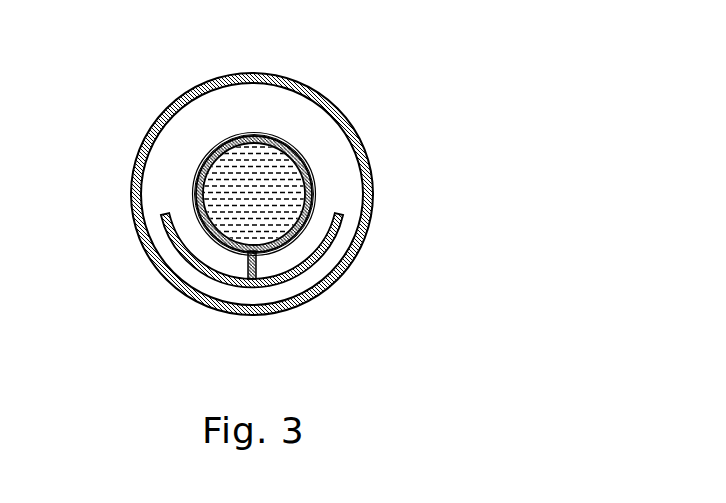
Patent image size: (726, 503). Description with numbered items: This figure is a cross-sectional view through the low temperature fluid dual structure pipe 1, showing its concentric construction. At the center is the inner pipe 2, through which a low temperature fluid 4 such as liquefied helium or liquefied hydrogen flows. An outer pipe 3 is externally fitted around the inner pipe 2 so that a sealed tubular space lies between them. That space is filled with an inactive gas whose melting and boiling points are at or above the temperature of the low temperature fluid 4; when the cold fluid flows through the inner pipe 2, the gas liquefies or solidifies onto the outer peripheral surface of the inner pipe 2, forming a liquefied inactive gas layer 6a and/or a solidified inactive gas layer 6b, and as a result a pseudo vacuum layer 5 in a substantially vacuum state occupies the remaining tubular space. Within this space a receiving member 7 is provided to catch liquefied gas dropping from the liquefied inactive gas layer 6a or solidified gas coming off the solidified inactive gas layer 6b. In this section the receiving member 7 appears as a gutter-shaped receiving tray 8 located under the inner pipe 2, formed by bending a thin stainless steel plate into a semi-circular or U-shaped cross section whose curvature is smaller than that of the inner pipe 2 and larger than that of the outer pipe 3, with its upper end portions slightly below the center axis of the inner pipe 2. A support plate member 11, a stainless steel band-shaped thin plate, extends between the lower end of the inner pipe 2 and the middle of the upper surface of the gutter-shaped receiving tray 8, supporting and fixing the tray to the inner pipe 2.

The low temperature fluid dual structure pipe 1 is at (352, 78).
The inner pipe 2 is at (272, 138).
The outer pipe 3 is at (368, 193).
The low temperature fluid 4 is at (207, 186).
The pseudo vacuum layer 5 is at (162, 147).
The liquefied inactive gas layer 6a is at (223, 140).
The solidified inactive gas layer 6b is at (254, 139).
The receiving member 7 is at (237, 284).
The gutter-shaped receiving tray 8 is at (185, 258).
The support plate member 11 is at (258, 270).